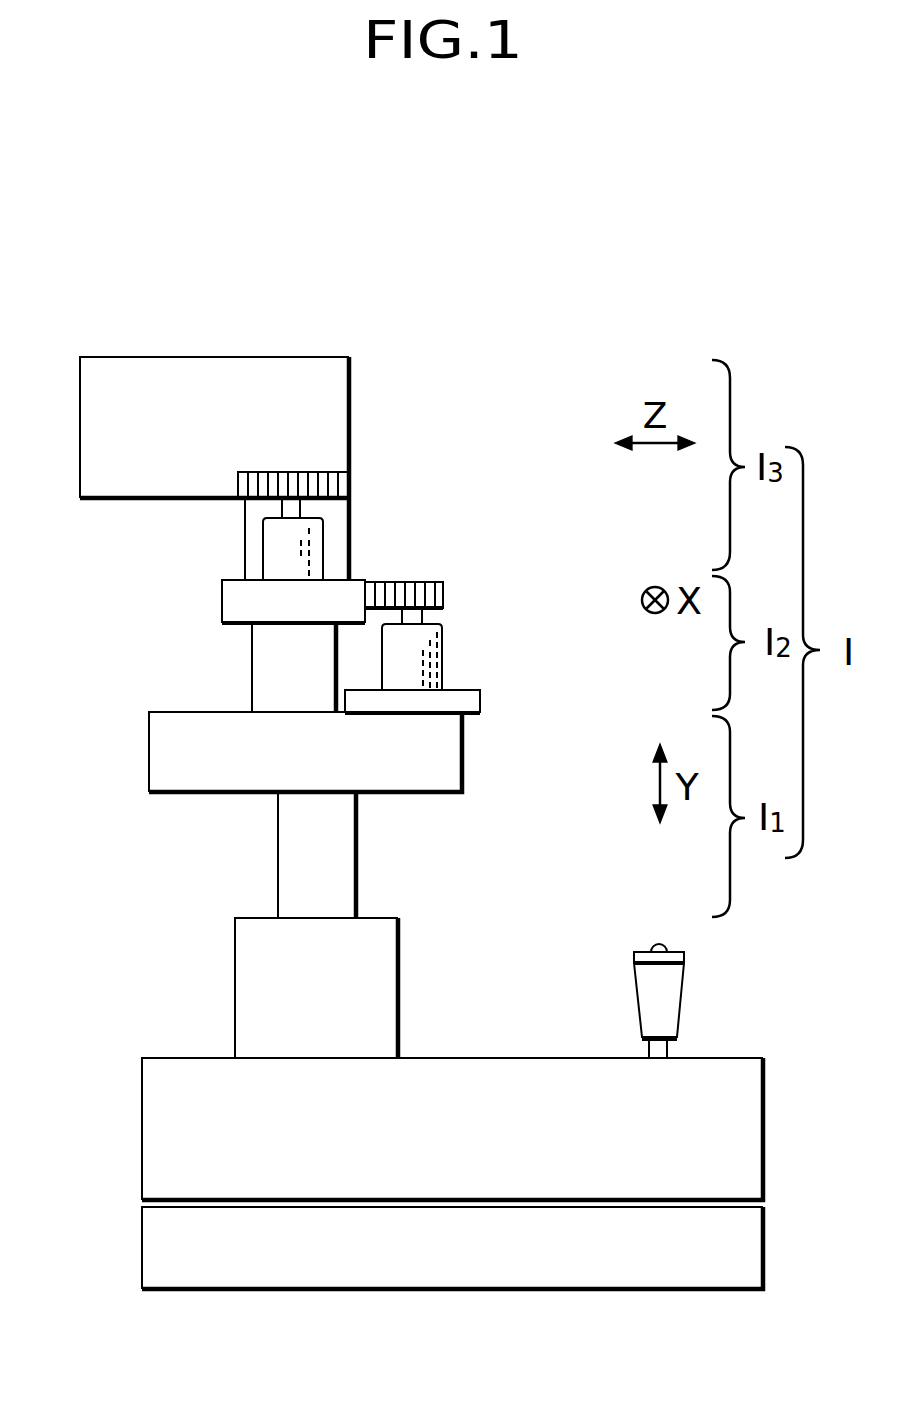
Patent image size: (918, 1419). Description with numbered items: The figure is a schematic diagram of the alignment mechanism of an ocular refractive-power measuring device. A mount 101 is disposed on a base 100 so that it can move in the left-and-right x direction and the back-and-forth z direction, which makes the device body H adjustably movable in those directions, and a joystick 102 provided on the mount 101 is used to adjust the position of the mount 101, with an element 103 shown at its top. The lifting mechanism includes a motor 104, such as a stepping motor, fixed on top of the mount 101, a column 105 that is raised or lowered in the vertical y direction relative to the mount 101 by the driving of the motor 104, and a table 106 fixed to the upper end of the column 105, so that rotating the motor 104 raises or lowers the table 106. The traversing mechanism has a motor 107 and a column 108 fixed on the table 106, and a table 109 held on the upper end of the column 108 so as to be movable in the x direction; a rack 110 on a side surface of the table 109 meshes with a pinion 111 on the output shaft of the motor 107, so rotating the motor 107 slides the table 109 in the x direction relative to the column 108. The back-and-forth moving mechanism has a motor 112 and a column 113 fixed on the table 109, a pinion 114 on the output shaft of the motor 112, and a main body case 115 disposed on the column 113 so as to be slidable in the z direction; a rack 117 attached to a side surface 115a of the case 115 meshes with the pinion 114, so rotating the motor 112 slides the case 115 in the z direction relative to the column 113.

The base 100 is at (155, 1250).
The mount 101 is at (155, 1132).
The joystick 102 is at (683, 996).
The workpiece 103 is at (645, 948).
The motor 104 is at (388, 992).
The column 105 is at (345, 858).
The table 106 is at (447, 746).
The motor 107 is at (436, 650).
The column 108 is at (256, 664).
The table 109 is at (225, 598).
The rack 110 is at (372, 590).
The pinion 111 is at (430, 583).
The motor 112 is at (282, 550).
The column 113 is at (255, 517).
The pinion 114 is at (300, 473).
The main body case 115 is at (108, 372).
The side surface 115a is at (198, 398).
The rack 117 is at (337, 472).
The device body H is at (297, 355).